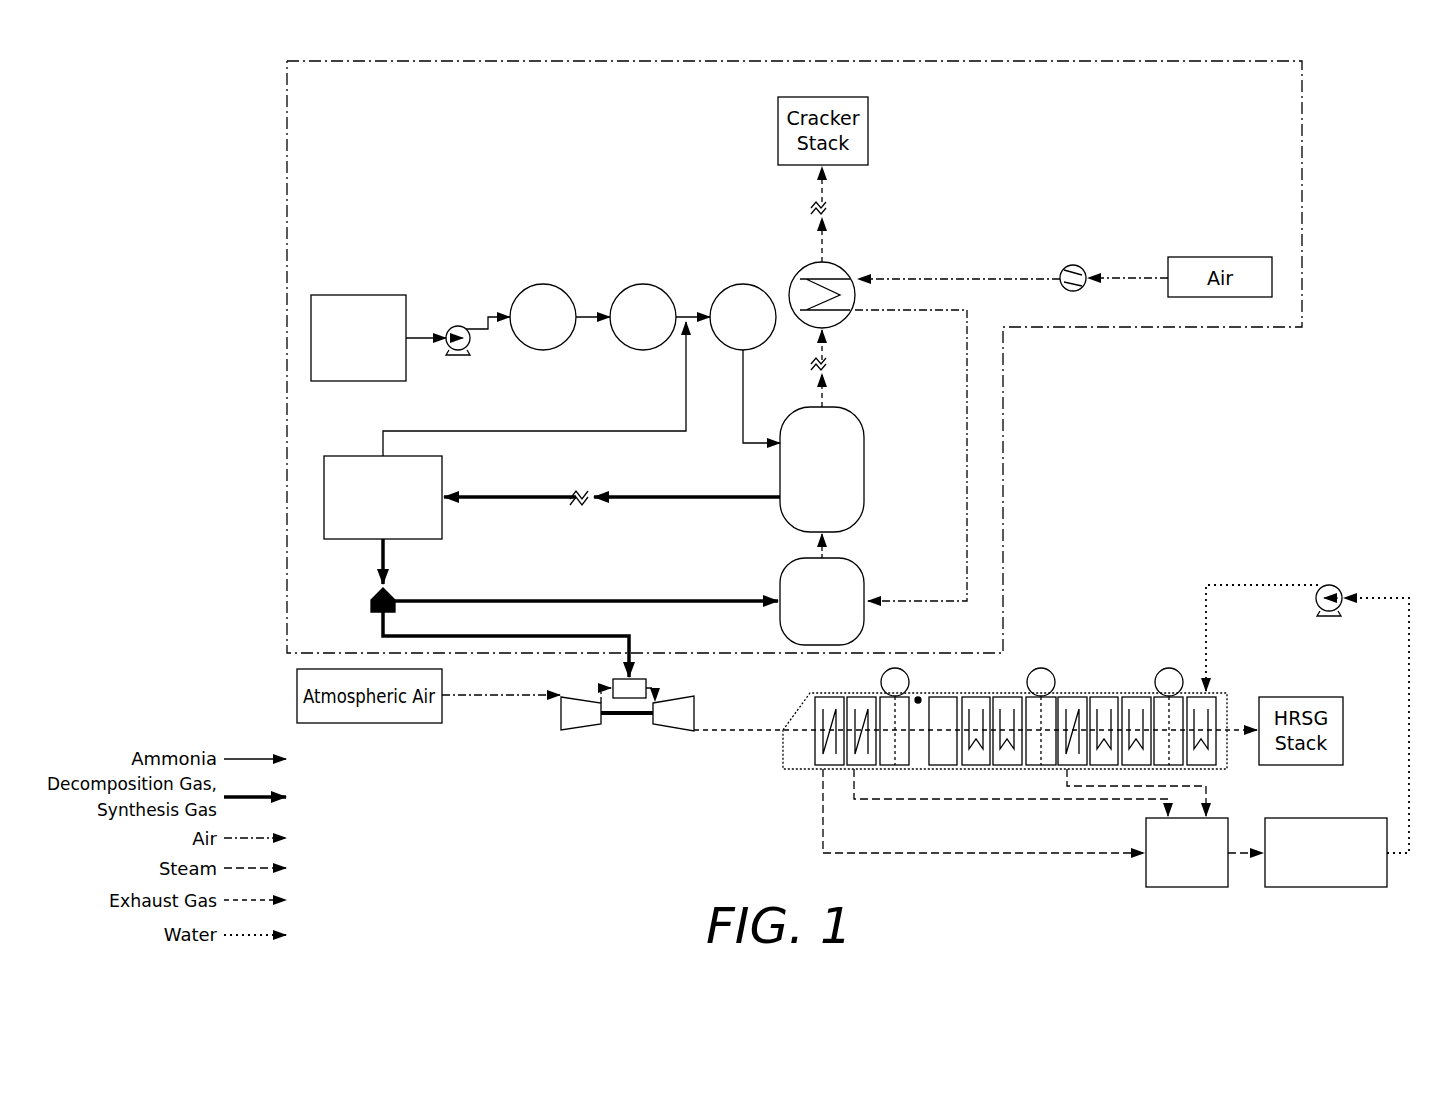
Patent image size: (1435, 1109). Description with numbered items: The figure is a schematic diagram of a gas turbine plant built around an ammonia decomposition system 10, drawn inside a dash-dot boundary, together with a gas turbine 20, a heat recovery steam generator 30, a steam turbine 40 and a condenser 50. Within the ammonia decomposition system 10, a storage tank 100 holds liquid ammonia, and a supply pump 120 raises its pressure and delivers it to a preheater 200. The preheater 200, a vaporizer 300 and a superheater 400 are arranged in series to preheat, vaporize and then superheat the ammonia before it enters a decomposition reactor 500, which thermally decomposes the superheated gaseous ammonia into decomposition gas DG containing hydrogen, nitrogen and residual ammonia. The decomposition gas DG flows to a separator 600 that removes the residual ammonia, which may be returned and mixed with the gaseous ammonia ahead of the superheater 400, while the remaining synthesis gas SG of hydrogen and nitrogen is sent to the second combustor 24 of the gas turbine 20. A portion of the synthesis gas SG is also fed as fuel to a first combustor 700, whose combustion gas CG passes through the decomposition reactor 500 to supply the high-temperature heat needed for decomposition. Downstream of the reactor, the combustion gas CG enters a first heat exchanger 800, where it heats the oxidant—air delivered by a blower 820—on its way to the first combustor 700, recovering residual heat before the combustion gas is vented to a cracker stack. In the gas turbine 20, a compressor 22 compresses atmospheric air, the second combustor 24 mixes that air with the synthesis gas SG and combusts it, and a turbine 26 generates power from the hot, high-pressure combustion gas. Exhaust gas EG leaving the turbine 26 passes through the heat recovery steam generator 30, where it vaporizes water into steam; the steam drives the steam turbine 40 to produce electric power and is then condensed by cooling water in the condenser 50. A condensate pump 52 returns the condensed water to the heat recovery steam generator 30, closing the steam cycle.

The ammonia decomposition system 10 is at (1345, 158).
The storage tank 100 is at (362, 295).
The supply pump 120 is at (459, 326).
The preheater 200 is at (543, 284).
The vaporizer 300 is at (641, 284).
The superheater 400 is at (741, 284).
The decomposition reactor 500 is at (864, 460).
The separator 600 is at (324, 496).
The first combustor 700 is at (864, 614).
The first heat exchanger 800 is at (844, 269).
The blower 820 is at (1071, 266).
The gas turbine 20 is at (627, 753).
The compressor 22 is at (577, 718).
The second combustor 24 is at (630, 699).
The turbine 26 is at (673, 740).
The heat recovery steam generator 30 is at (977, 776).
The steam turbine 40 is at (1183, 887).
The condenser 50 is at (1323, 887).
The condensate pump 52 is at (1336, 586).
The decomposition gas DG is at (717, 494).
The combustion gas CG is at (826, 554).
The synthesis gas SG is at (380, 558).
The exhaust gas EG is at (735, 736).